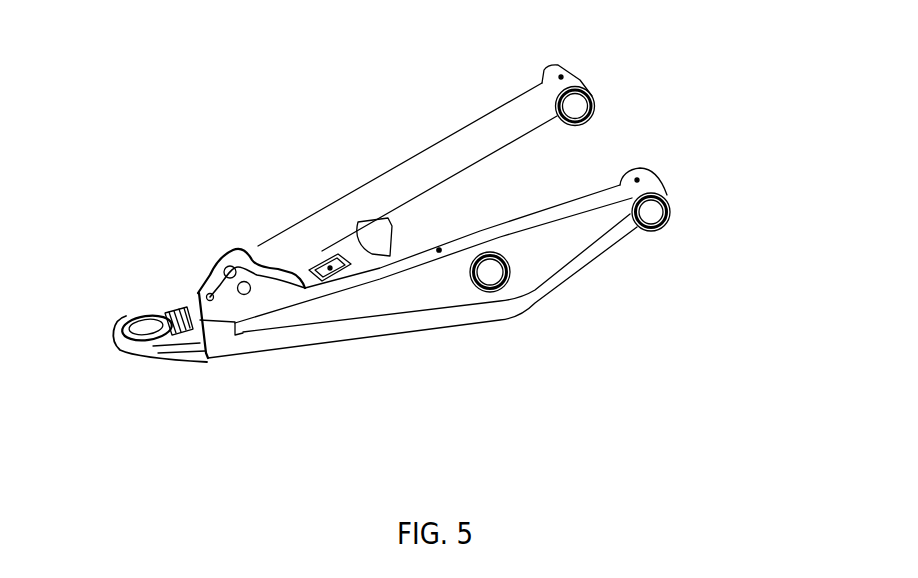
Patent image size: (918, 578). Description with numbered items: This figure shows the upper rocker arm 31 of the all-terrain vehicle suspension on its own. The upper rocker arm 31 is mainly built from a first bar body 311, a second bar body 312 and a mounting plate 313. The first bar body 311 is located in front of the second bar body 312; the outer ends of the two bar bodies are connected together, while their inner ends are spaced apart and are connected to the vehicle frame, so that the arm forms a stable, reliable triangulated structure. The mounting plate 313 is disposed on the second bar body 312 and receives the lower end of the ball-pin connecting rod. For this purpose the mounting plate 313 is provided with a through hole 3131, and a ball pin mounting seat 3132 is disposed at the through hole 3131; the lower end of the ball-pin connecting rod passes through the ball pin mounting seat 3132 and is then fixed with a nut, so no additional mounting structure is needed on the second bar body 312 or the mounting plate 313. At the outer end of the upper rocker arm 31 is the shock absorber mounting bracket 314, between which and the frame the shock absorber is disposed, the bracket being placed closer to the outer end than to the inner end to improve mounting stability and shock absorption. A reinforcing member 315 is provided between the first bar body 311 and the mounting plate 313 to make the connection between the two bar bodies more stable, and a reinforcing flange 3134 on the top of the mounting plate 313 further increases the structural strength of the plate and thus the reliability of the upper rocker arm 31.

The upper rocker arm 31 is at (368, 49).
The first bar body 311 is at (367, 197).
The second bar body 312 is at (463, 313).
The mounting plate 313 is at (368, 300).
The shock absorber mounting bracket 314 is at (212, 287).
The reinforcing member 315 is at (324, 250).
The through hole 3131 is at (453, 247).
The ball pin mounting seat 3132 is at (488, 252).
The reinforcing flange 3134 is at (640, 196).